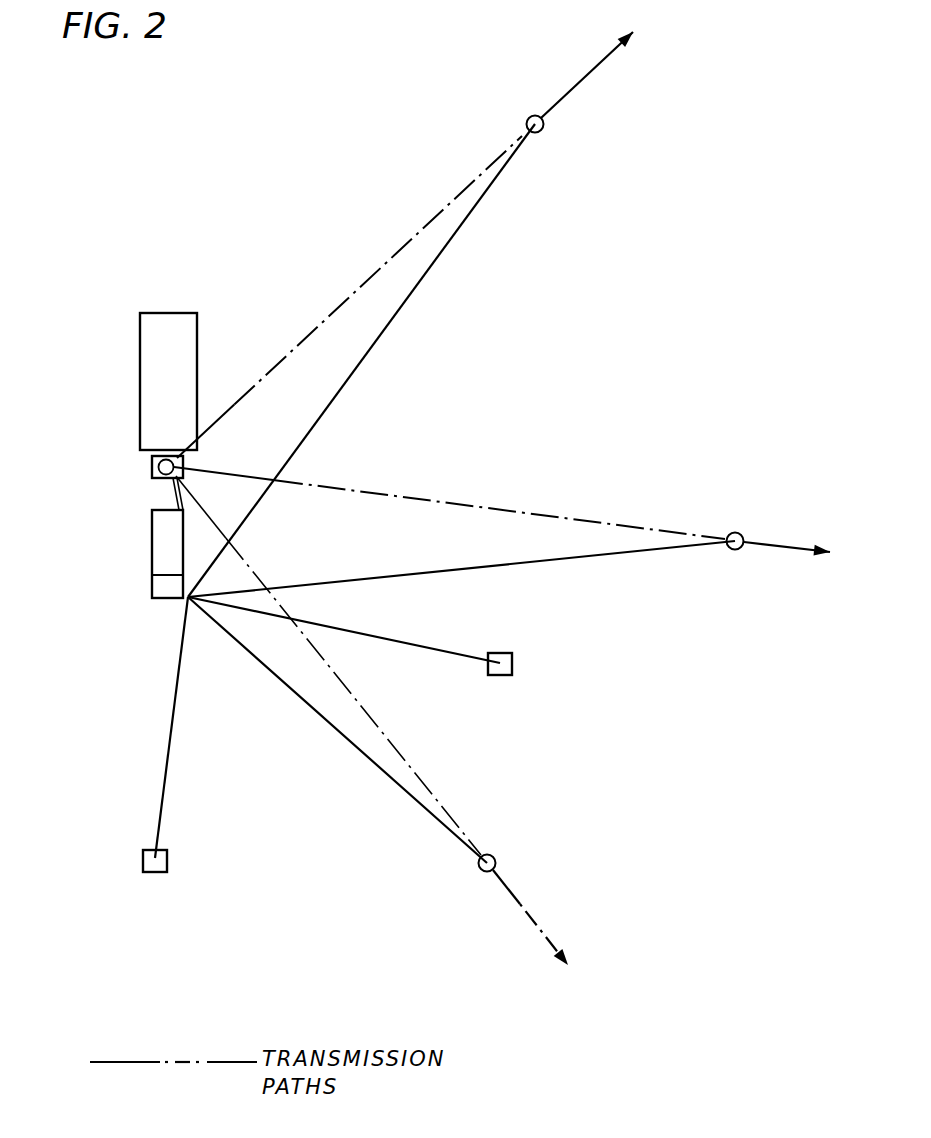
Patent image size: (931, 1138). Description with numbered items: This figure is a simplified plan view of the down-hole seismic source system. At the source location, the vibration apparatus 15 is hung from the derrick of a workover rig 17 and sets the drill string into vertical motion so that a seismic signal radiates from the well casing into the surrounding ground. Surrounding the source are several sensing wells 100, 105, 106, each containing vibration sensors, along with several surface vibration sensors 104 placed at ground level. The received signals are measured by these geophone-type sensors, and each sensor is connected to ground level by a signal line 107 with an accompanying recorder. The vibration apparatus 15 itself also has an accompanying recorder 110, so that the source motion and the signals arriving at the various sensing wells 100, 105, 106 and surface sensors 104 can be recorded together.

The vibration apparatus 15 is at (136, 473).
The workover rig 17 is at (162, 330).
The sensing well 100 is at (740, 533).
The vibration sensor 104 is at (505, 675).
The sensing well 105 is at (494, 856).
The sensing well 106 is at (544, 126).
The signal line 107 is at (318, 578).
The recorder 110 is at (152, 583).